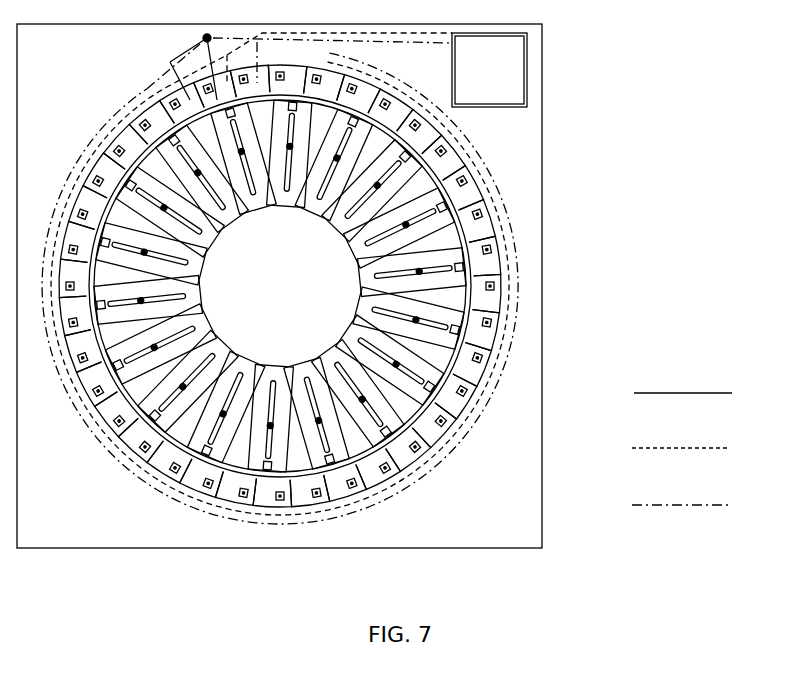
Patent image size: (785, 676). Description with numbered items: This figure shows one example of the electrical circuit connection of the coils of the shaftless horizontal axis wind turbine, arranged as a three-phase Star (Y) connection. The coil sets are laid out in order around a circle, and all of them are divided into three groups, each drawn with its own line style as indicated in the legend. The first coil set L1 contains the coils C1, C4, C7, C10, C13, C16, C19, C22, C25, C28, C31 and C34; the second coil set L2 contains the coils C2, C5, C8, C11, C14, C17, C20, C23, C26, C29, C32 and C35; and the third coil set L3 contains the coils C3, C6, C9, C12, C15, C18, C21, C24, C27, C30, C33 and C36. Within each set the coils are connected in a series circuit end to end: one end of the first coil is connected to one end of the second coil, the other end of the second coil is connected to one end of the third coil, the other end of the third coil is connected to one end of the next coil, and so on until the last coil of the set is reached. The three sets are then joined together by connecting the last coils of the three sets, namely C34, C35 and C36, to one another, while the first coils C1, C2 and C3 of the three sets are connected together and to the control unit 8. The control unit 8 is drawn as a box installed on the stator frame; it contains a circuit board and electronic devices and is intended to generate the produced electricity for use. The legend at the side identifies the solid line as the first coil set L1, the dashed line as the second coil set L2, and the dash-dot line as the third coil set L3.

The control unit 8 is at (502, 70).
The coil C1 is at (287, 67).
The coil C2 is at (323, 72).
The coil C3 is at (358, 82).
The coil C4 is at (390, 98).
The coil C5 is at (422, 119).
The coil C6 is at (452, 151).
The coil C7 is at (476, 184).
The coil C8 is at (493, 220).
The coil C9 is at (504, 256).
The coil C10 is at (512, 293).
The coil C11 is at (506, 329).
The coil C12 is at (492, 364).
The coil C13 is at (475, 398).
The coil C14 is at (450, 431).
The coil C15 is at (421, 461).
The coil C16 is at (385, 485).
The coil C17 is at (350, 498).
The coil C18 is at (315, 508).
The coil C19 is at (274, 514).
The coil C20 is at (236, 509).
The coil C21 is at (199, 497).
The coil C22 is at (165, 482).
The coil C23 is at (131, 458).
The coil C24 is at (105, 425).
The coil C25 is at (78, 390).
The coil C26 is at (61, 355).
The coil C27 is at (51, 318).
The coil C28 is at (45, 278).
The coil C29 is at (51, 242).
The coil C30 is at (64, 208).
The coil C31 is at (82, 174).
The coil C32 is at (106, 145).
The coil C33 is at (135, 116).
The coil C34 is at (167, 92).
The coil C35 is at (201, 67).
The coil C36 is at (247, 56).
The first coil set L1 is at (706, 393).
The second coil set L2 is at (705, 448).
The third coil set L3 is at (705, 505).